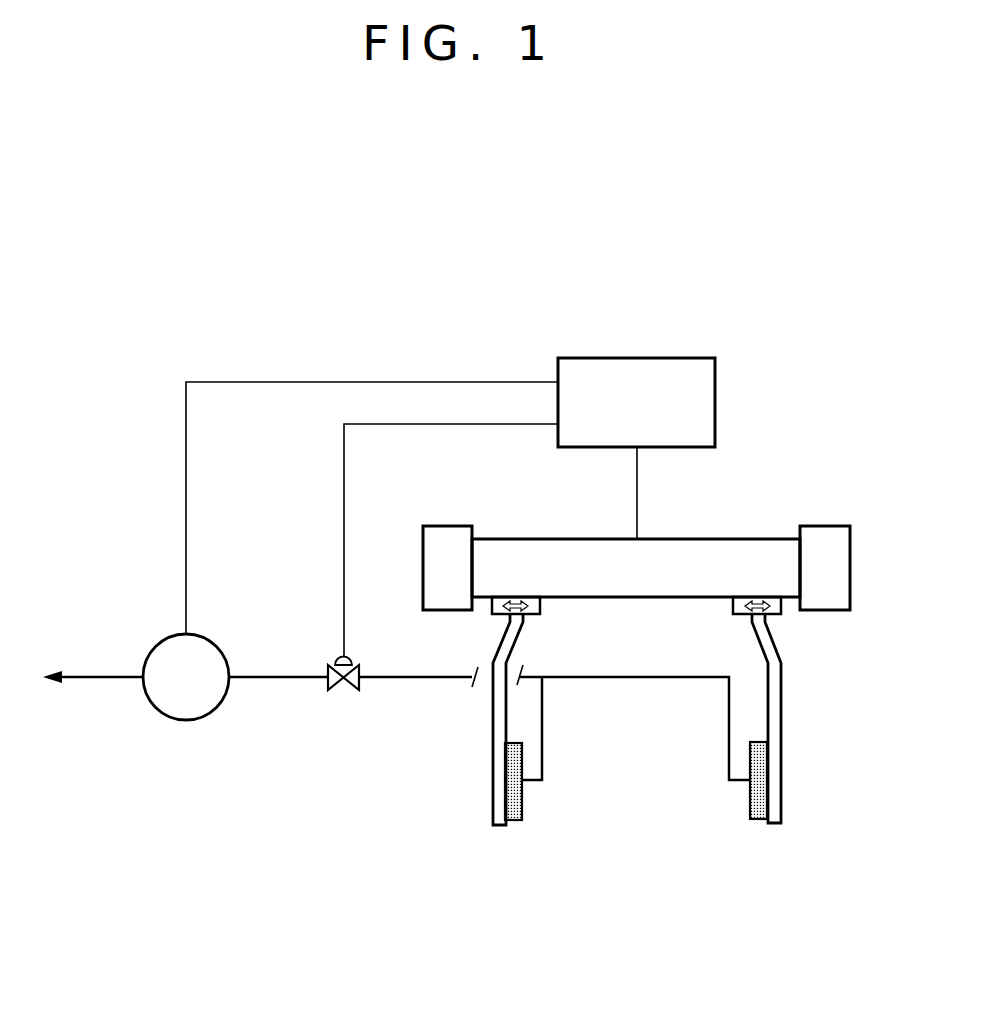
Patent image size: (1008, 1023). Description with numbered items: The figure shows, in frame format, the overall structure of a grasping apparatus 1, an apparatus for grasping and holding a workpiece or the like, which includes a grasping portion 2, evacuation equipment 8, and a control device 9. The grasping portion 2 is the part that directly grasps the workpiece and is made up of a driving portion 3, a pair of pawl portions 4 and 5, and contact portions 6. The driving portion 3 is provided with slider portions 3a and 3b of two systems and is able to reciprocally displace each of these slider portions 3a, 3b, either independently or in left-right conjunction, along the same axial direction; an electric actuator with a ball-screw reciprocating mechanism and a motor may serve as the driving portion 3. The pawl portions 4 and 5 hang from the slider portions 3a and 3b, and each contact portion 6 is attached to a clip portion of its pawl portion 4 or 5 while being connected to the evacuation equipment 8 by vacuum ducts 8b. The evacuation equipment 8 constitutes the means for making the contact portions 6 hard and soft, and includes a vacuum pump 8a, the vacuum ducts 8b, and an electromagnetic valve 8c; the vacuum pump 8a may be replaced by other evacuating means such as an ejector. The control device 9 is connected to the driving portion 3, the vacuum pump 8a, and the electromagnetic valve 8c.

The grasping apparatus 1 is at (108, 310).
The grasping portion 2 is at (794, 500).
The driving portion 3 is at (528, 532).
The slider portion 3a is at (542, 604).
The slider portion 3b is at (733, 604).
The pawl portion 4 is at (465, 769).
The pawl portion 5 is at (796, 768).
The contact portion 6 is at (536, 798).
The evacuation equipment 8 is at (130, 722).
The vacuum pump 8a is at (186, 720).
The vacuum ducts 8b is at (542, 747).
The electromagnetic valve 8c is at (362, 672).
The control device 9 is at (715, 400).